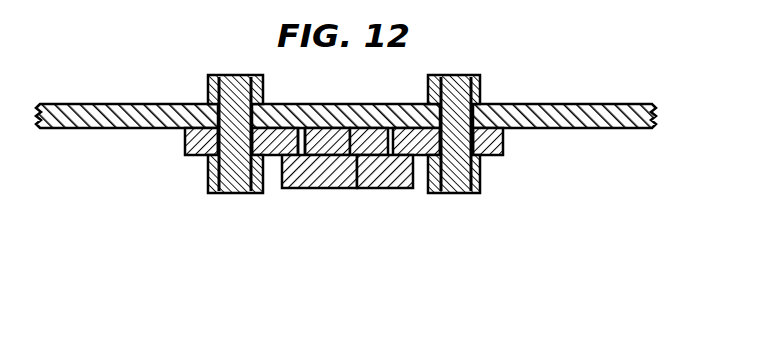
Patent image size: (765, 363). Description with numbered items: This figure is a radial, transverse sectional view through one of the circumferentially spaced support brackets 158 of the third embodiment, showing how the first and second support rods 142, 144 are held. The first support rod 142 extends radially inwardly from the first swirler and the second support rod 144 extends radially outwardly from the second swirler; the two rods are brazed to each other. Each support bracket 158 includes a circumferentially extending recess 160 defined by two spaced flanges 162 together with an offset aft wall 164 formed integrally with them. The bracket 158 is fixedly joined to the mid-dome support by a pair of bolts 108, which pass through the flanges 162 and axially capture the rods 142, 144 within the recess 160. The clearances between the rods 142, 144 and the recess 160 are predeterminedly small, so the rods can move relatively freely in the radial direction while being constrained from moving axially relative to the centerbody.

The bolt 108 is at (221, 194).
The first support rod 142 is at (282, 188).
The second support rod 144 is at (352, 188).
The support bracket 158 is at (412, 192).
The recess 160 is at (310, 152).
The flange 162 is at (185, 141).
The offset aft wall 164 is at (324, 188).